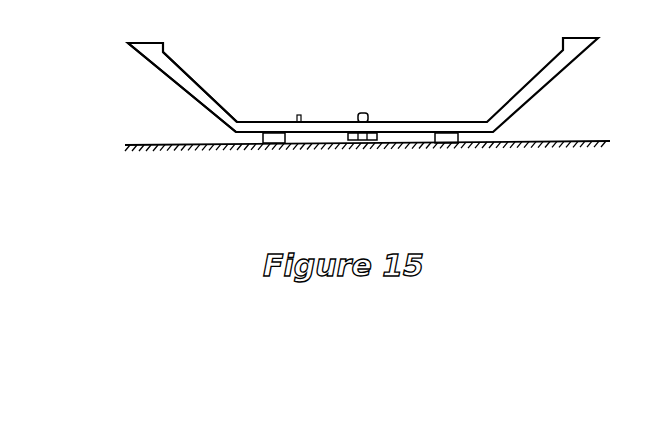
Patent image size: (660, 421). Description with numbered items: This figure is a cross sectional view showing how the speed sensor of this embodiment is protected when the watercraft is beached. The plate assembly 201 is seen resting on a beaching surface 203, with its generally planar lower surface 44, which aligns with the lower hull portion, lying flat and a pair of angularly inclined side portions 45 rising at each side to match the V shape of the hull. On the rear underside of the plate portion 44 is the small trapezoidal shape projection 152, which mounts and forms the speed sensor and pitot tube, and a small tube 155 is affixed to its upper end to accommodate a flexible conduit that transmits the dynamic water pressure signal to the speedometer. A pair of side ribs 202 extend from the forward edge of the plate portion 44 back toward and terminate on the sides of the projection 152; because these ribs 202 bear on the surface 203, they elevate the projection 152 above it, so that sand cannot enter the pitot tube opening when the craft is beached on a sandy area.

The planar lower surface 44 is at (298, 118).
The angularly inclined side portions 45 is at (187, 70).
The trough assembly 201 is at (157, 70).
The small tube 155 is at (368, 117).
The trapezoidal shape projection 152 is at (343, 135).
The side ribs 202 is at (278, 136).
The surface 203 is at (560, 140).